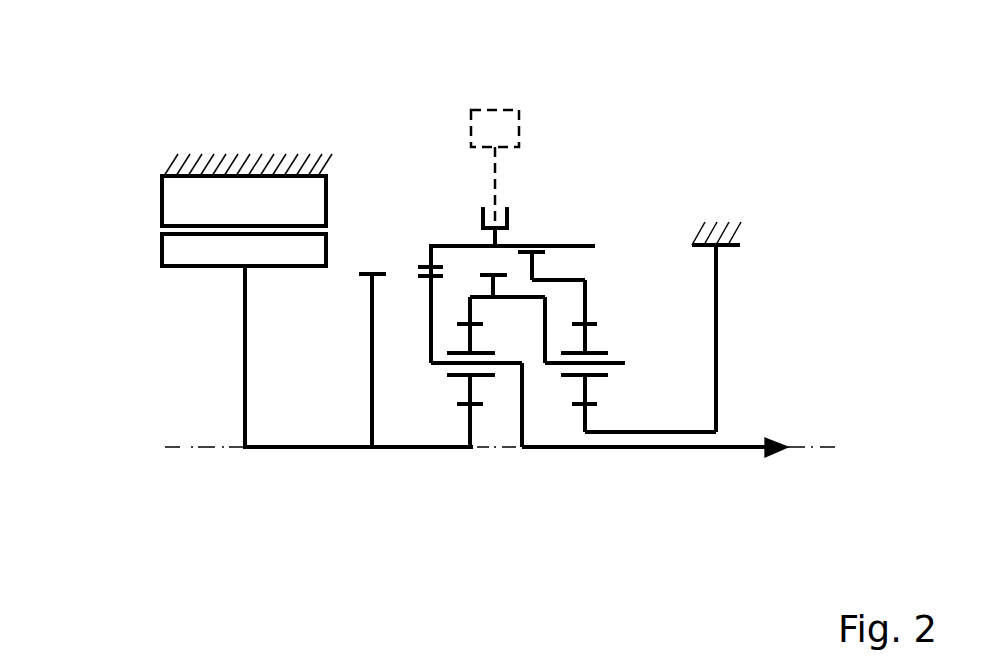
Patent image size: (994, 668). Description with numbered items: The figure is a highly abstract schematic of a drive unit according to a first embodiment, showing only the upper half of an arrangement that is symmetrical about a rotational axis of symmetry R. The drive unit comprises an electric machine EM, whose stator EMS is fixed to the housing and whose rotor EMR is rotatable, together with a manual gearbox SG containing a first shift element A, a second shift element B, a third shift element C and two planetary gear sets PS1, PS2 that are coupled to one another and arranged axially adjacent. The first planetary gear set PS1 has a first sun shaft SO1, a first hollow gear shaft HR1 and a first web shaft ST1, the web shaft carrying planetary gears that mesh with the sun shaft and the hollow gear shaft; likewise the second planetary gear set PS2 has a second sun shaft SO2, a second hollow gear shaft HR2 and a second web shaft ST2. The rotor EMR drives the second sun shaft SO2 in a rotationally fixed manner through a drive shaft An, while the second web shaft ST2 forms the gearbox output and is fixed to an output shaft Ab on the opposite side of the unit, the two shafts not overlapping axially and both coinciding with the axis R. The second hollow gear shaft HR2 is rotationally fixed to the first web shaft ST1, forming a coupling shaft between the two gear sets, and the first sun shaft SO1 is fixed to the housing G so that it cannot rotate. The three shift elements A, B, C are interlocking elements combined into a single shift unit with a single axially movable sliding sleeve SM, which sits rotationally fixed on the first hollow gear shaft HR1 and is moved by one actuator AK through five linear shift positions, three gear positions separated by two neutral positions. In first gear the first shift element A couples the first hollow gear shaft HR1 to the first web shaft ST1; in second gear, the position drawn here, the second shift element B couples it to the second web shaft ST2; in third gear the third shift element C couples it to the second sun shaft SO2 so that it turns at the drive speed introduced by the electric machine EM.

The stator EMS is at (173, 203).
The rotor EMR is at (173, 249).
The electric machine EM is at (182, 276).
The third shift element C is at (372, 258).
The second shift element B is at (426, 221).
The first shift element A is at (487, 259).
The actuator AK is at (497, 95).
The sliding sleeve SM is at (539, 126).
The manual gearbox SG is at (613, 137).
The housing G is at (731, 212).
The first hollow gear shaft HR1 is at (587, 303).
The first web shaft ST1 is at (613, 362).
The first sun shaft SO1 is at (585, 413).
The second hollow gear shaft HR2 is at (470, 310).
The second web shaft ST2 is at (440, 365).
The second sun shaft SO2 is at (470, 420).
The first planetary gear set PS1 is at (585, 475).
The second planetary gear set PS2 is at (470, 475).
The drive shaft An is at (273, 448).
The output shaft Ab is at (708, 448).
The rotational axis of symmetry R is at (822, 448).